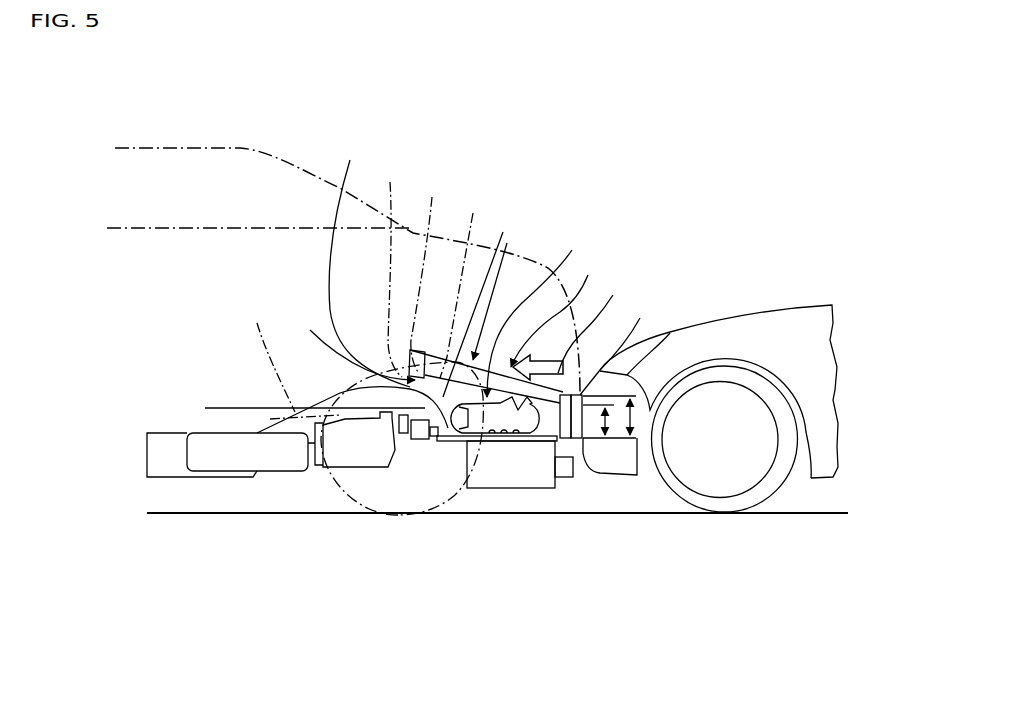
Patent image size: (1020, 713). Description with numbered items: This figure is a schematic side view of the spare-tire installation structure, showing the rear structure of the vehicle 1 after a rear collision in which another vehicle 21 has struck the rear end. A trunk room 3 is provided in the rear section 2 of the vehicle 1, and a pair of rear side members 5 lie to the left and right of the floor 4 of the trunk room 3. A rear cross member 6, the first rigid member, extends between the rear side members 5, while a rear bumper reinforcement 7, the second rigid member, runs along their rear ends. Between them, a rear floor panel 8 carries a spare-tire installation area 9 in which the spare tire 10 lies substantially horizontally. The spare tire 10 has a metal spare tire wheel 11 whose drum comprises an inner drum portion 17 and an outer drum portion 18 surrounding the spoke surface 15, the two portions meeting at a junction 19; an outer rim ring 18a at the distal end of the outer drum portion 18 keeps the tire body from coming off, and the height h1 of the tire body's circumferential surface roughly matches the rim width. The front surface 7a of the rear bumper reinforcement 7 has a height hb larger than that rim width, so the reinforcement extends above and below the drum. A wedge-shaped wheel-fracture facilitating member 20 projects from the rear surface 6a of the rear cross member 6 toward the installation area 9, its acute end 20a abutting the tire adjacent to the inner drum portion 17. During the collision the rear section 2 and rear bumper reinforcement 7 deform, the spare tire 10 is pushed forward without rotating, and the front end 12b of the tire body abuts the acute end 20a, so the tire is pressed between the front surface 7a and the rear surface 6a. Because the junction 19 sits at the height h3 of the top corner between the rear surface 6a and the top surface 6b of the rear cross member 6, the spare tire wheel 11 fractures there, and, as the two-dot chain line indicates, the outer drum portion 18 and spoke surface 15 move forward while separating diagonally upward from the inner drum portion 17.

The vehicle 1 is at (293, 150).
The rear section 2 is at (528, 245).
The trunk room 3 is at (466, 298).
The floor 4 is at (218, 408).
The rear side member 5 is at (311, 408).
The rear cross member 6 is at (418, 443).
The rear surface 6a is at (369, 264).
The top surface 6b is at (429, 353).
The rear bumper reinforcement 7 is at (569, 424).
The front surface 7a is at (550, 470).
The rear floor panel 8 is at (468, 490).
The spare-tire installation area 9 is at (503, 445).
The spare tire 10 is at (557, 311).
The spare tire wheel 11 is at (592, 327).
The front end 12b is at (485, 304).
The spoke surface 15 is at (537, 314).
The inner drum portion 17 is at (513, 442).
The outer drum portion 18 is at (426, 274).
The outer rim ring 18a is at (462, 286).
The junction 19 is at (390, 269).
The wheel-fracture facilitating member 20 is at (433, 444).
The acute end 20a is at (480, 444).
The another vehicle 21 is at (730, 312).
The height of the circumferential surface of the tire body h1 is at (607, 414).
The height of the top corner of the rear cross member h3 is at (290, 361).
The height of the front surface of the rear bumper reinforcement hb is at (631, 414).